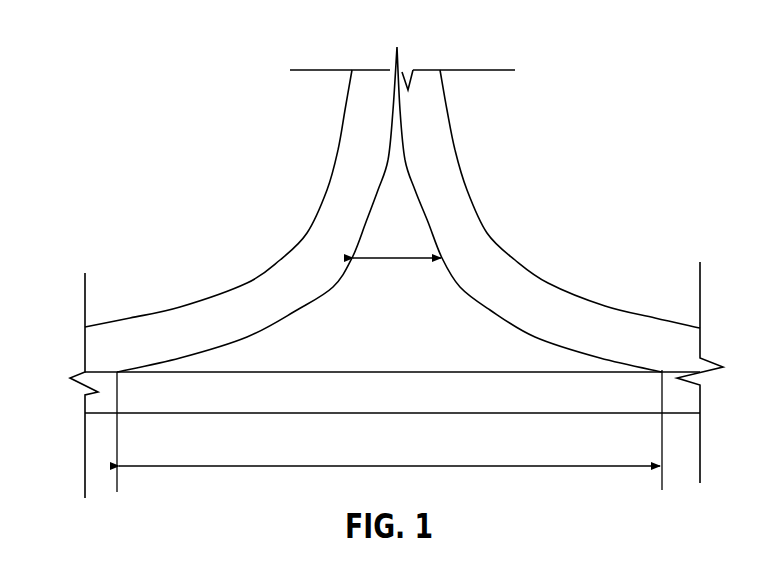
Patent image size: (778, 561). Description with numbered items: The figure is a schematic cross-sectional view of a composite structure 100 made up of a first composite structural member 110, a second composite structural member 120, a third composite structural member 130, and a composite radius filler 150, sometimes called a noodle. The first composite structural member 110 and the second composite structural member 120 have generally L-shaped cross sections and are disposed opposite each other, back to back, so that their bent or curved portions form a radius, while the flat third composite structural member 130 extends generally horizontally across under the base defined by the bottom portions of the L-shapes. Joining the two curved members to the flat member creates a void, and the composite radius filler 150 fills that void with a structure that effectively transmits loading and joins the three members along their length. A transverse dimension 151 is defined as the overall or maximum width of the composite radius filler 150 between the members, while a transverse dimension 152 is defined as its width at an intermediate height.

The composite structure 100 is at (131, 110).
The first composite structural member 110 is at (428, 127).
The second composite structural member 120 is at (302, 253).
The third composite structural member 130 is at (492, 393).
The composite radius filler 150 is at (448, 322).
The transverse dimension 151 is at (213, 462).
The transverse dimension 152 is at (382, 263).